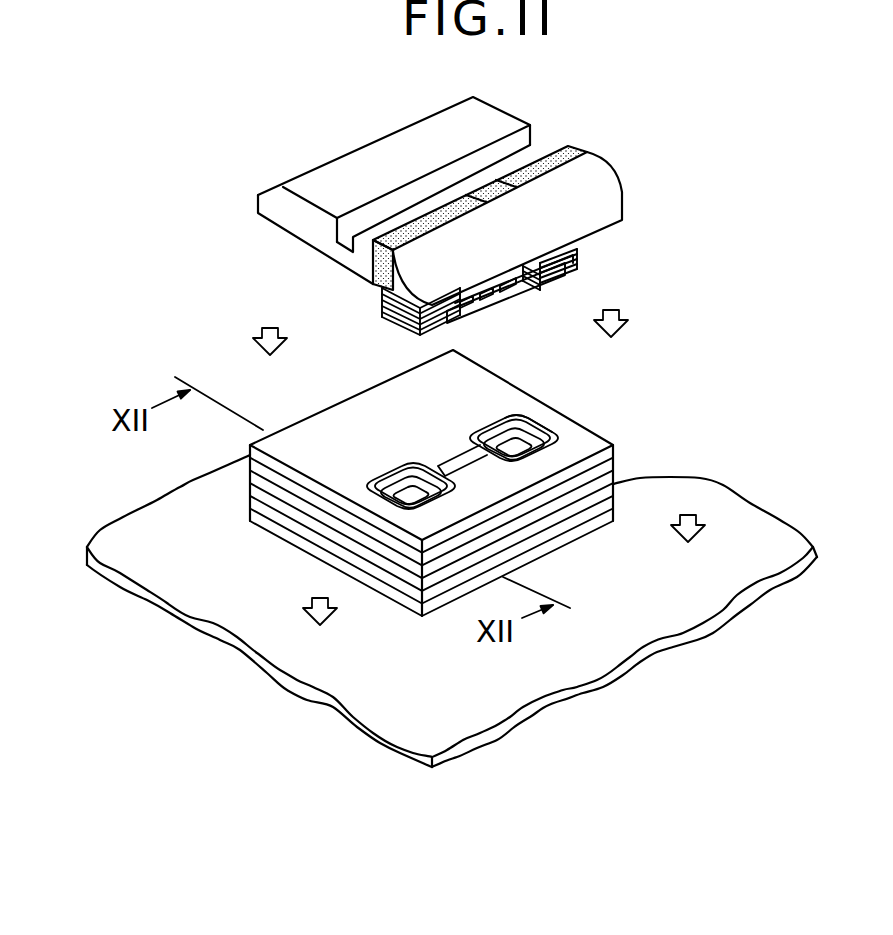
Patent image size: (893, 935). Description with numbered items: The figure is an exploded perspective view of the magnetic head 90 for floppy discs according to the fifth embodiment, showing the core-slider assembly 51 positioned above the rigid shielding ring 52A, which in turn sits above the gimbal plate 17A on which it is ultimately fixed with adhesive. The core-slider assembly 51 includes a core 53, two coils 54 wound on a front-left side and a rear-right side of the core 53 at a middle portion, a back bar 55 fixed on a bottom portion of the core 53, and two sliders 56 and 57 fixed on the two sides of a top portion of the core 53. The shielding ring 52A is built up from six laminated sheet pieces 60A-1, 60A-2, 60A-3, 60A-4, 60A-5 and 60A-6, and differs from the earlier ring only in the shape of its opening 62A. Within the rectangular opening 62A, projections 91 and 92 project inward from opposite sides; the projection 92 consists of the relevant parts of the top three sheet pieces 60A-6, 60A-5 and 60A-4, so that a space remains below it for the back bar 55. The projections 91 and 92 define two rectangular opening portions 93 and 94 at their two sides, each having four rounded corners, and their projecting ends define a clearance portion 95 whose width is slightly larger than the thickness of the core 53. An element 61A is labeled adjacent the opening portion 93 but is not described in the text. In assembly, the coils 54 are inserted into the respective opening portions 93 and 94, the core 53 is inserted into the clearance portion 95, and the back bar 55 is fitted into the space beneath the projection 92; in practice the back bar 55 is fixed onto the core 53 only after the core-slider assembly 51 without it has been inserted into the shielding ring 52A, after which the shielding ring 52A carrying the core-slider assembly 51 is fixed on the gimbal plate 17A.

The magnetic head 90 is at (709, 110).
The core-slider assembly 51 is at (620, 166).
The slider 57 is at (389, 144).
The core 53 is at (574, 152).
The slider 56 is at (609, 198).
The coil 54 is at (380, 306).
The back bar 55 is at (535, 292).
The shielding ring 52A is at (623, 362).
The opening 62A is at (361, 447).
The sheet piece 60A-6 is at (614, 454).
The sheet piece 60A-5 is at (615, 464).
The sheet piece 60A-4 is at (615, 473).
The sheet piece 60A-3 is at (700, 478).
The sheet piece 60A-2 is at (617, 507).
The sheet piece 60A-1 is at (600, 530).
The opening portion 94 is at (387, 487).
The opening portion 93 is at (500, 422).
The recess rim 61A is at (533, 420).
The clearance portion 95 is at (447, 457).
The projection 91 is at (436, 455).
The projection 92 is at (475, 470).
The gimbal plate 17A is at (507, 697).